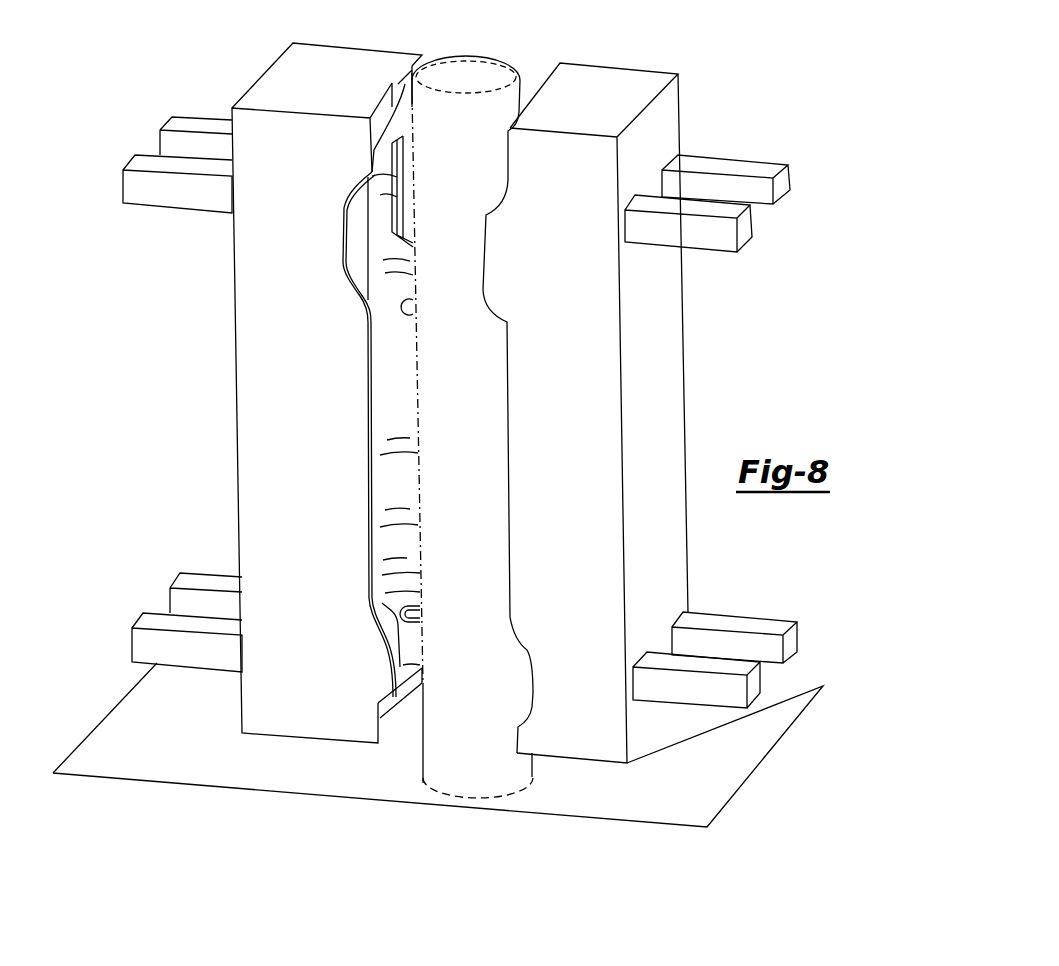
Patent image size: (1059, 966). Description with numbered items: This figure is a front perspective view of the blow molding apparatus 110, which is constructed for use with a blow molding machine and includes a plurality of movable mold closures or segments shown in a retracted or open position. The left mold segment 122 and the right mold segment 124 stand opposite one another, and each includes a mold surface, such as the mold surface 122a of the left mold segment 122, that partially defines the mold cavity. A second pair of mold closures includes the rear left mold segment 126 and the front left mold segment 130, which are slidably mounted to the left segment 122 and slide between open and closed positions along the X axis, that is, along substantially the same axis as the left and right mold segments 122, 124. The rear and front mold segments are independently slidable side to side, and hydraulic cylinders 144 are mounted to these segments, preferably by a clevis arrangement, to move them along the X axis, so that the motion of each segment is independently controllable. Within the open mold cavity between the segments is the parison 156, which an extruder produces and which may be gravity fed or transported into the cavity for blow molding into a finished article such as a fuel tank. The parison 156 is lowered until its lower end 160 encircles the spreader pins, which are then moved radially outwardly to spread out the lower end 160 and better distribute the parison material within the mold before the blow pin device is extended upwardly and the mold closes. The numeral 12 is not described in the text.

The base plate 12 is at (803, 687).
The blow molding apparatus 110 is at (604, 49).
The left mold segment 122 is at (343, 94).
The mold surface 122a is at (355, 298).
The right mold segment 124 is at (603, 114).
The rear left mold segment 126 is at (398, 340).
The front left mold segment 130 is at (345, 246).
The hydraulic cylinders 144 is at (197, 170).
The parison 156 is at (491, 54).
The lower end 160 is at (420, 791).